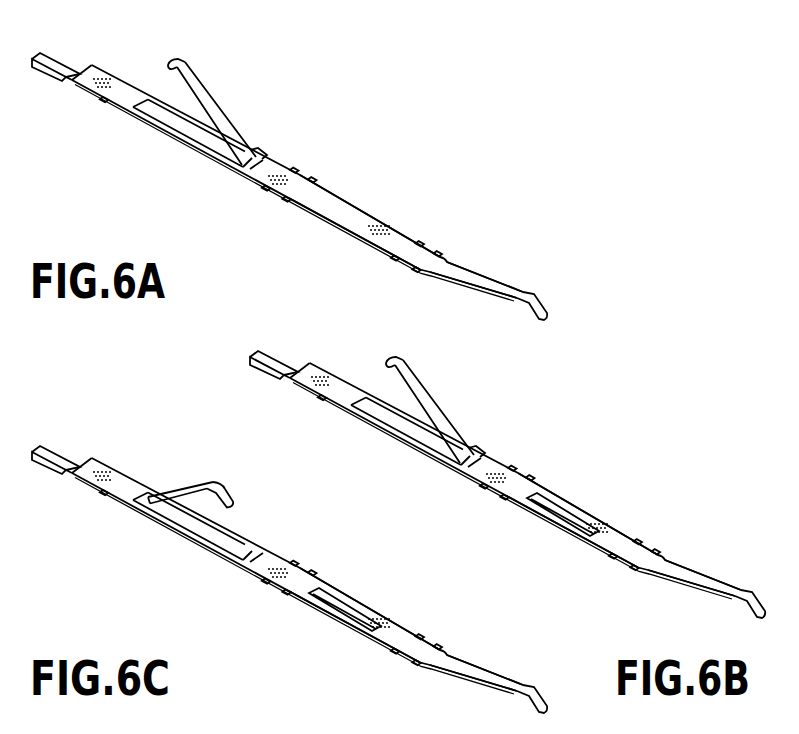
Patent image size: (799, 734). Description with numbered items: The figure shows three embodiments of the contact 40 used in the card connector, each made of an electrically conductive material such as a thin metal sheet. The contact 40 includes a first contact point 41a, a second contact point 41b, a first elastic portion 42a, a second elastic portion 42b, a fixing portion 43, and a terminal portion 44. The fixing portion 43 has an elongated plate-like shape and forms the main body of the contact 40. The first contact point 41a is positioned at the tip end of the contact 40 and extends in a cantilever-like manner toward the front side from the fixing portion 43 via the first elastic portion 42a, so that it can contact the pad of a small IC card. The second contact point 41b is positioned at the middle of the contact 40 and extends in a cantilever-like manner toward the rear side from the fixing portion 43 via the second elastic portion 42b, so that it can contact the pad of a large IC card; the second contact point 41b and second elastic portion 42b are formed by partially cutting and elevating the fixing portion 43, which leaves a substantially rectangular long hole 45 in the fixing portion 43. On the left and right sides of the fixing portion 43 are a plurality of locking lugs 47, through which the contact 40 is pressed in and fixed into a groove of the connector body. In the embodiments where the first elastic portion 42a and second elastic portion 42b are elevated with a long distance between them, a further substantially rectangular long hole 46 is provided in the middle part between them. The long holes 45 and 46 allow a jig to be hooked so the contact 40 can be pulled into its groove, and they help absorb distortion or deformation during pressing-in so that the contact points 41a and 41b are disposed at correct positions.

In FIG. 6A, the contact 40 is at (379, 181).
In FIG. 6B, the contact 40 is at (512, 482).
In FIG. 6C, the contact 40 is at (294, 577).
In FIG. 6A, the first contact point 41a is at (545, 304).
In FIG. 6B, the first contact point 41a is at (754, 583).
In FIG. 6C, the first contact point 41a is at (536, 680).
In FIG. 6A, the second contact point 41b is at (186, 60).
In FIG. 6B, the second contact point 41b is at (431, 355).
In FIG. 6C, the second contact point 41b is at (209, 468).
In FIG. 6A, the first elastic portion 42a is at (485, 279).
In FIG. 6B, the first elastic portion 42a is at (694, 557).
In FIG. 6C, the first elastic portion 42a is at (476, 653).
In FIG. 6A, the second elastic portion 42b is at (222, 116).
In FIG. 6B, the second elastic portion 42b is at (443, 411).
In FIG. 6C, the second elastic portion 42b is at (178, 470).
In FIG. 6A, the fixing portion 43 is at (352, 220).
In FIG. 6B, the fixing portion 43 is at (563, 483).
In FIG. 6C, the fixing portion 43 is at (345, 579).
In FIG. 6A, the terminal portion 44 is at (47, 64).
In FIG. 6B, the terminal portion 44 is at (273, 386).
In FIG. 6C, the terminal portion 44 is at (55, 481).
In FIG. 6A, the long hole 45 is at (162, 120).
In FIG. 6B, the long hole 45 is at (410, 446).
In FIG. 6C, the long hole 45 is at (192, 541).
In FIG. 6B, the long hole 46 is at (563, 537).
In FIG. 6C, the long hole 46 is at (345, 630).
In FIG. 6A, the locking lug 47 is at (130, 83).
In FIG. 6B, the locking lug 47 is at (489, 482).
In FIG. 6C, the locking lug 47 is at (271, 577).